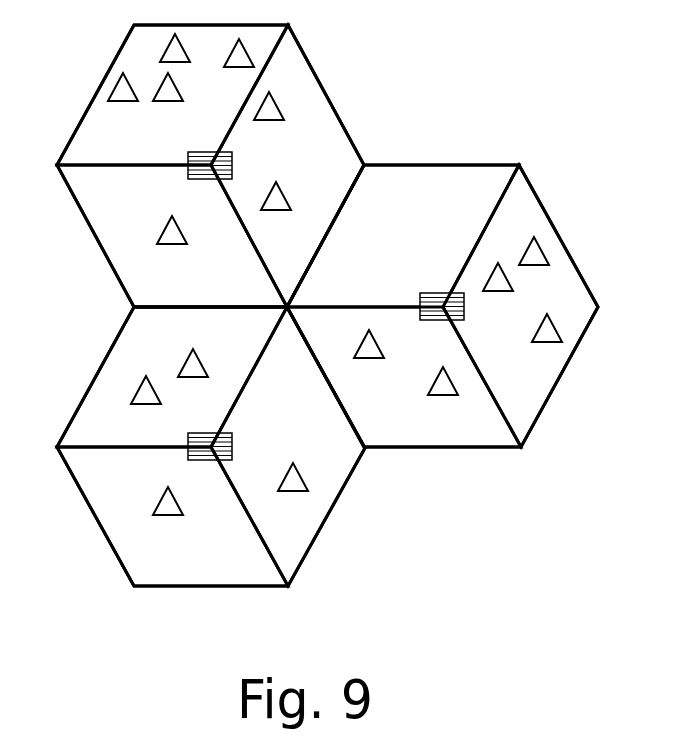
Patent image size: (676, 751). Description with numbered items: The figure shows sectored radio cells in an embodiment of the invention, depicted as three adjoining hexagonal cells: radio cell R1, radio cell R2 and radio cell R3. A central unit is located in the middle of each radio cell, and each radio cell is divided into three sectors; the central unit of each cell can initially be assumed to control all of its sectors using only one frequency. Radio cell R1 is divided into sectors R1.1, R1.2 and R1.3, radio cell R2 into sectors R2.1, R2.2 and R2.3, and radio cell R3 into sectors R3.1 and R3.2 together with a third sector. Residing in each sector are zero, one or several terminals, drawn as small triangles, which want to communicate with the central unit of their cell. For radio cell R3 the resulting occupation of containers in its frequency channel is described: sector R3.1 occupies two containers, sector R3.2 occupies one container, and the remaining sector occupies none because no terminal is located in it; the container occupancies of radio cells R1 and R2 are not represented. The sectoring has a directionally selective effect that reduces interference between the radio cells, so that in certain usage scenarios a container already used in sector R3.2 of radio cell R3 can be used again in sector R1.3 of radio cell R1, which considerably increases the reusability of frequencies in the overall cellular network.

The radio cell R1 is at (208, 166).
The sector of radio cell R1 R1.1 is at (287, 166).
The sector of radio cell R1 R1.2 is at (172, 236).
The sector of radio cell R1 R1.3 is at (288, 166).
The radio cell R2 is at (211, 446).
The sector of radio cell R2 R2.1 is at (288, 446).
The sector of radio cell R2 R2.2 is at (172, 516).
The sector of radio cell R2 R2.3 is at (172, 377).
The radio cell R3 is at (442, 289).
The sector of radio cell R3 R3.1 is at (520, 306).
The sector of radio cell R3 R3.2 is at (404, 377).